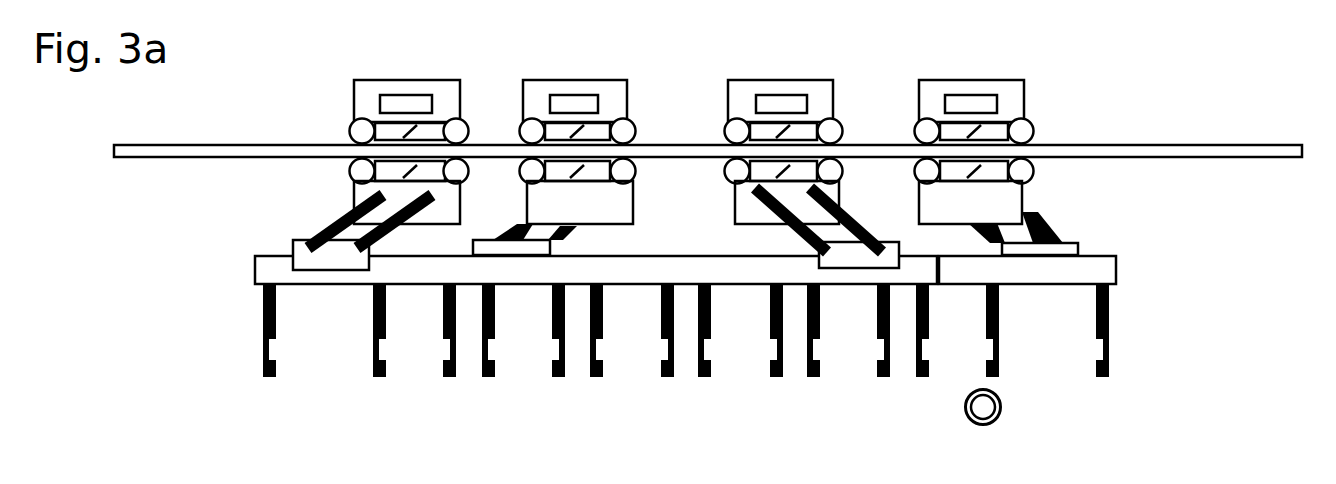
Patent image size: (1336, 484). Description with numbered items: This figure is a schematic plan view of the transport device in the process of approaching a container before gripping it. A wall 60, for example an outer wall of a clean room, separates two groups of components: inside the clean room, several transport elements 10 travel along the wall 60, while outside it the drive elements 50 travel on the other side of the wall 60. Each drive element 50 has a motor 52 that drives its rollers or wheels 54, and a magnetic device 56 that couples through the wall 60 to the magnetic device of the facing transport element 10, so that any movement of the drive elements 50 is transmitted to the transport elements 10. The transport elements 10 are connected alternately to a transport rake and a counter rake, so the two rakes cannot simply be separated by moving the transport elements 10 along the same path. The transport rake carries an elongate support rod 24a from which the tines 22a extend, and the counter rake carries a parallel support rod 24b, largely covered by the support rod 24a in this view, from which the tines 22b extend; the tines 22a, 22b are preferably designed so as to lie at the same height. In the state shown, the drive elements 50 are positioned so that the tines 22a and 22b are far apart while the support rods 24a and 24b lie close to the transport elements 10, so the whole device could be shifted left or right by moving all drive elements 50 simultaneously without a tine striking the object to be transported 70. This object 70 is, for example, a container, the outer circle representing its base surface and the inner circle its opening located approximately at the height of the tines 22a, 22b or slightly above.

The transport element 10 is at (352, 200).
The tines of the transport rake 22a is at (882, 395).
The tines of the counter rake 22b is at (997, 372).
The support rod of the transport rake 24a is at (267, 270).
The support rod of the counter rake 24b is at (1100, 270).
The drive element 50 is at (363, 90).
The motor 52 is at (521, 63).
The rollers or wheels 54 is at (685, 92).
The magnetic device of the drive element 56 is at (897, 92).
The wall 60 is at (123, 150).
The object or item to be transported 70 is at (942, 445).